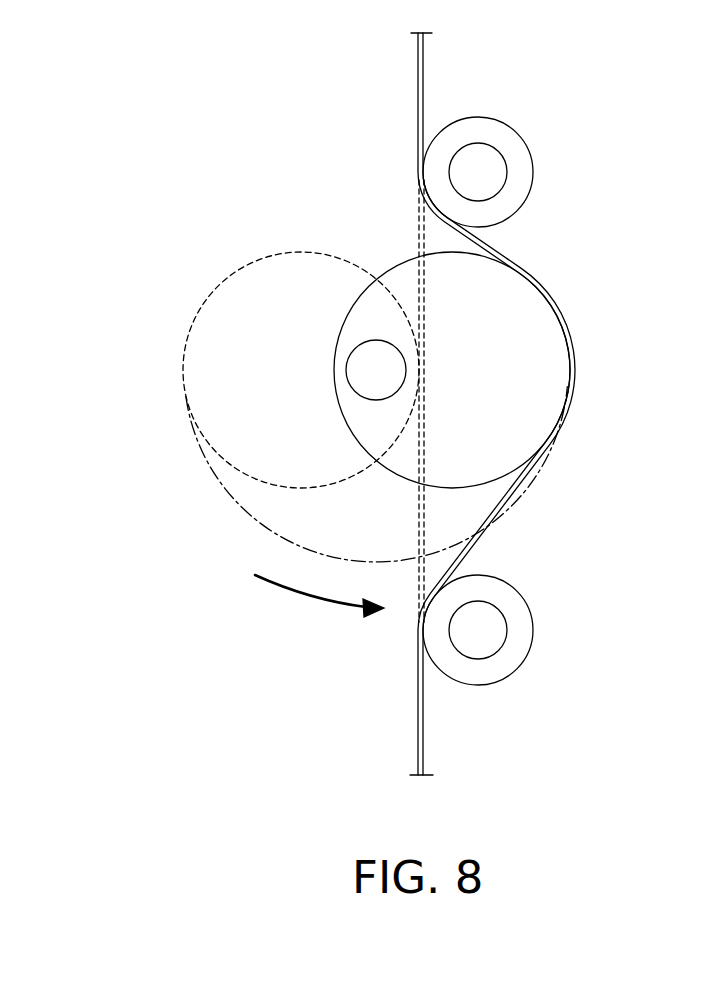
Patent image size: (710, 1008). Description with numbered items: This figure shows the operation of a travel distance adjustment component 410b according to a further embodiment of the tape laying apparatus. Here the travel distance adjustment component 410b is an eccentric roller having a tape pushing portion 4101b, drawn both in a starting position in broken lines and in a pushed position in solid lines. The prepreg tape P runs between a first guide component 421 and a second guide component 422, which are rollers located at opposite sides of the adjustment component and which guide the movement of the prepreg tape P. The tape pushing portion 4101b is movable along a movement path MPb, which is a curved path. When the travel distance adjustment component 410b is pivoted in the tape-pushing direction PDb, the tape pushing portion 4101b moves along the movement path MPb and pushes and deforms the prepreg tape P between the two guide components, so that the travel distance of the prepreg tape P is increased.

The prepreg tape P is at (420, 60).
The first guide component 421 is at (525, 167).
The second guide component 422 is at (522, 637).
The travel distance adjustment component 410b is at (435, 341).
The tape pushing portion 4101b is at (552, 352).
The movement path MPb is at (253, 522).
The tape-pushing direction PDb is at (319, 604).